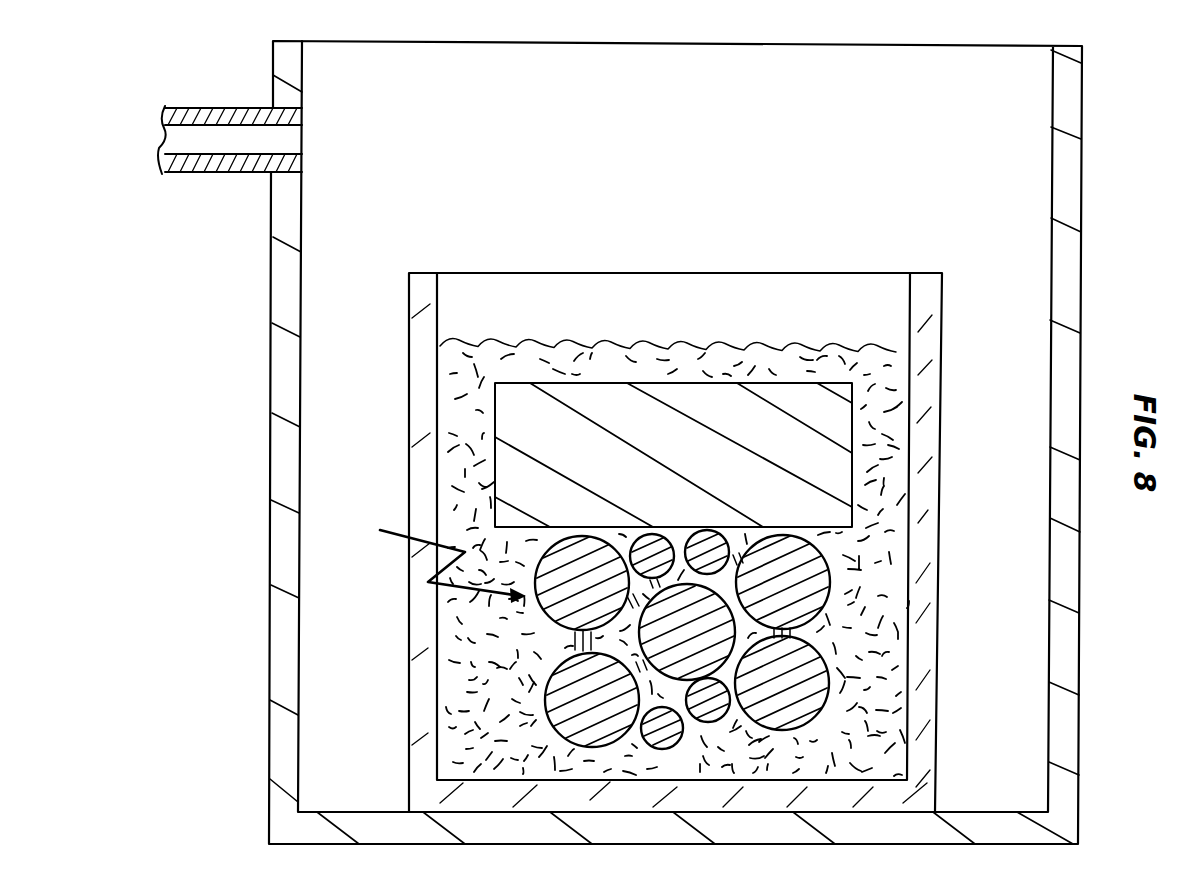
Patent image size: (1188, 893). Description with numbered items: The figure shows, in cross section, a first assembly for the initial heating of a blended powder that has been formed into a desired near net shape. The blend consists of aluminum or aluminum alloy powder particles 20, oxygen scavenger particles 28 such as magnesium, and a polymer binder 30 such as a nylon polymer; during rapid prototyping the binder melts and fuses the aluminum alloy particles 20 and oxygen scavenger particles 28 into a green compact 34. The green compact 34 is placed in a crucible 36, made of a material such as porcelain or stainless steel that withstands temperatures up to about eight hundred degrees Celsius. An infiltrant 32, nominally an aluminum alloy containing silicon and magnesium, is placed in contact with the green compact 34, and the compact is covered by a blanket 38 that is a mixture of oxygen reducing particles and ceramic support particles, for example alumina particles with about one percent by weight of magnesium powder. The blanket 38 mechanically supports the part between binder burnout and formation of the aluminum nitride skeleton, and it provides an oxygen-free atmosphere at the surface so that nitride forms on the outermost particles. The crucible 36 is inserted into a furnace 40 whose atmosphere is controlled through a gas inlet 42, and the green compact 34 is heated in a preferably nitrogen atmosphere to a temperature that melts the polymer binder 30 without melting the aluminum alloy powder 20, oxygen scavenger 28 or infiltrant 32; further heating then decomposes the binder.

The aluminum alloy powder particles 20 is at (813, 697).
The oxygen scavenger particles 28 is at (687, 641).
The polymer binder 30 is at (812, 633).
The infiltrant 32 is at (836, 462).
The green compact 34 is at (432, 561).
The crucible 36 is at (928, 399).
The blanket 38 is at (467, 470).
The furnace 40 is at (1072, 262).
The gas inlet 42 is at (208, 108).